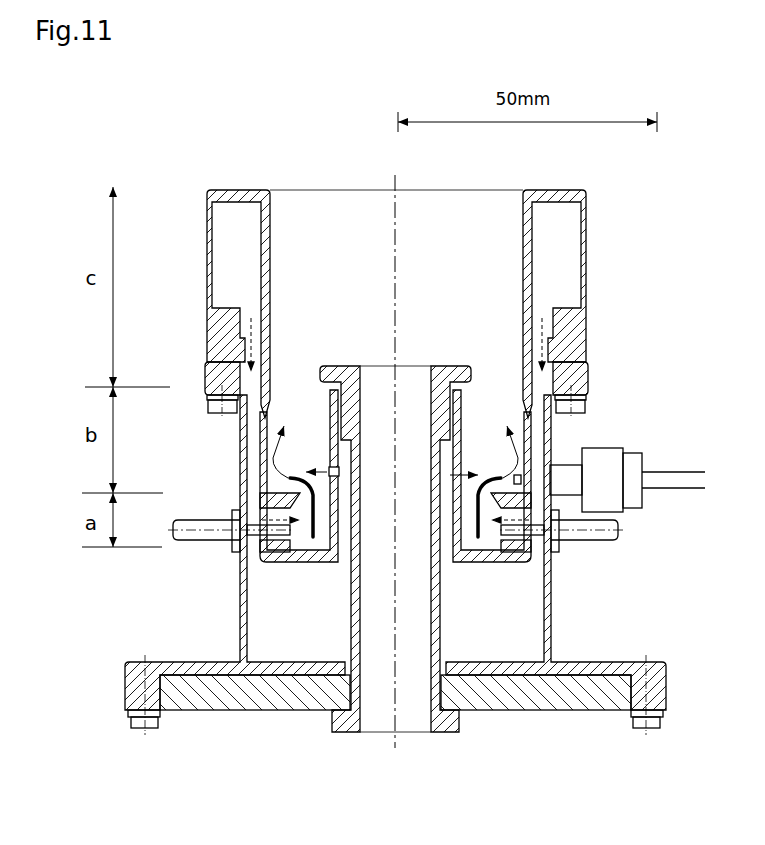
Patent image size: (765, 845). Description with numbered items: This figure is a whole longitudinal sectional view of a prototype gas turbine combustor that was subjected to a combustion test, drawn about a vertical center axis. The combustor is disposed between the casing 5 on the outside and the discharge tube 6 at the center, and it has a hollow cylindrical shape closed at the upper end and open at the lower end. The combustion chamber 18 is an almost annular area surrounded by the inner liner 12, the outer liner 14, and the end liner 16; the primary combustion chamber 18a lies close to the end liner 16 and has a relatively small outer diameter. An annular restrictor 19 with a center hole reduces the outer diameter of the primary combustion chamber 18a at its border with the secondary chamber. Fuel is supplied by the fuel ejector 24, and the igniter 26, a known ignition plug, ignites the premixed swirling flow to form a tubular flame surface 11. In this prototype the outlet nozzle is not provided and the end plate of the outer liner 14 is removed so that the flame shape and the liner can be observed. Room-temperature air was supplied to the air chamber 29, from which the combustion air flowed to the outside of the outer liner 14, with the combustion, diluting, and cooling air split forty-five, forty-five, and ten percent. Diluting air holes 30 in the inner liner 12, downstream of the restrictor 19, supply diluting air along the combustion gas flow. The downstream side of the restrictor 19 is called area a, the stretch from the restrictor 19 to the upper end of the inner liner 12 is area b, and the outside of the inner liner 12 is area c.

The casing 5 is at (552, 604).
The discharge tube 6 is at (338, 367).
The tubular flame surface 11 is at (312, 538).
The inner liner 12 is at (336, 515).
The outer liner 14 is at (266, 289).
The end liner 16 is at (478, 558).
The combustion chamber 18 is at (311, 407).
The primary combustion chamber 18a is at (491, 541).
The annular restrictor 19 is at (289, 494).
The fuel ejector 24 is at (528, 533).
The igniter 26 is at (568, 478).
The air chamber 29 is at (565, 256).
The diluting air holes 30 is at (331, 470).